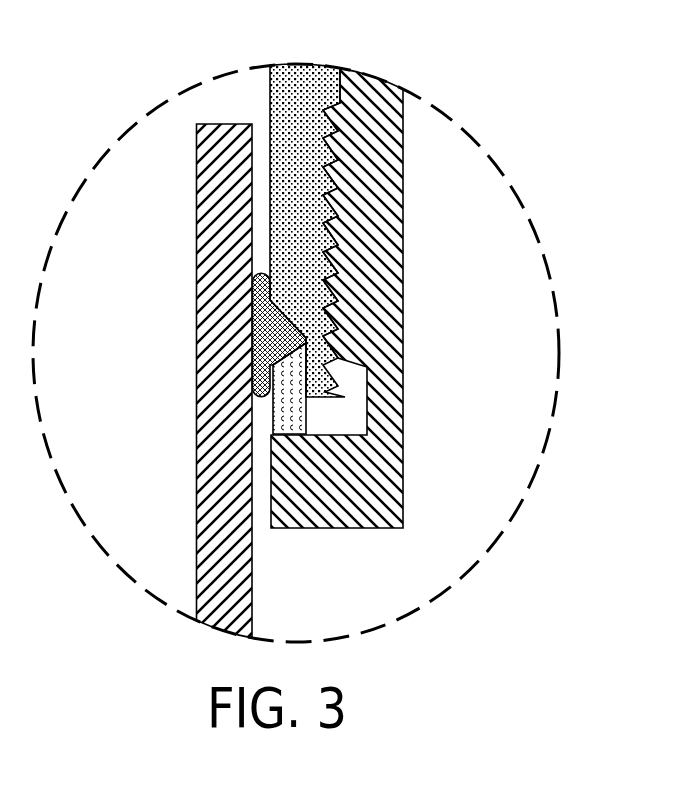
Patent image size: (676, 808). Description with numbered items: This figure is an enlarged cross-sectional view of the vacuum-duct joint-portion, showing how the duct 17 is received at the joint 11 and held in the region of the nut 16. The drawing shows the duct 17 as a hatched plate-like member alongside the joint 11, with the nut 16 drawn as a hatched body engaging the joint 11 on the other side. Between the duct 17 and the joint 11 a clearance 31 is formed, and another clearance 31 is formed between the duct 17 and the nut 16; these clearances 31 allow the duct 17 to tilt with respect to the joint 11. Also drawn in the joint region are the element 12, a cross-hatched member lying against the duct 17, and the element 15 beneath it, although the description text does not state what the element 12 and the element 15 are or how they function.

The joint 11 is at (270, 96).
The sealing member 12 is at (253, 335).
The filler portion 15 is at (286, 409).
The nut 16 is at (403, 238).
The duct 17 is at (197, 176).
The clearance 31 is at (264, 228).